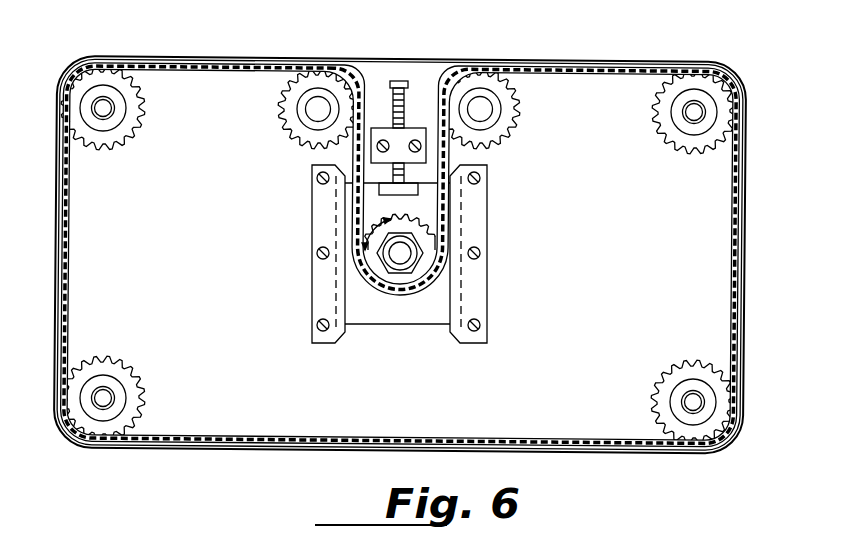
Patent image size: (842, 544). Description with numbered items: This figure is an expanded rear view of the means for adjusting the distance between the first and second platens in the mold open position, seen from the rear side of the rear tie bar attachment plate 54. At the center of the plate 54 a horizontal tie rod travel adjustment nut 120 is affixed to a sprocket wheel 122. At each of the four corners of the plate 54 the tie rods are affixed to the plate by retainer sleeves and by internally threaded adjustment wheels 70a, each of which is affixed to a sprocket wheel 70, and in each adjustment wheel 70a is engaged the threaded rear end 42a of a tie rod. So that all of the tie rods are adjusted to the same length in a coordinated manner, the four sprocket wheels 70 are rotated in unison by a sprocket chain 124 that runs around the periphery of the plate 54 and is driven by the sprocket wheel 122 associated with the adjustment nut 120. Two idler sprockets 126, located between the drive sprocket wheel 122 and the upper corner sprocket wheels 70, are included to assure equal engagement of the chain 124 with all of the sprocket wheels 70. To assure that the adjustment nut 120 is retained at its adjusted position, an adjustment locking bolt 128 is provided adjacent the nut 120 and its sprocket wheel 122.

The rear tie bar attachment plate 54 is at (189, 112).
The adjustment locking bolt 128 is at (405, 80).
The threaded rear ends of tie rods 42a is at (694, 108).
The idler sprockets 126 is at (288, 105).
The sprocket wheels 70 is at (658, 130).
The internally threaded adjustment wheels 70a is at (687, 127).
The sprocket wheel 122 is at (428, 246).
The horizontal tie rod travel adjustment nut 120 is at (403, 273).
The sprocket chain 124 is at (733, 263).